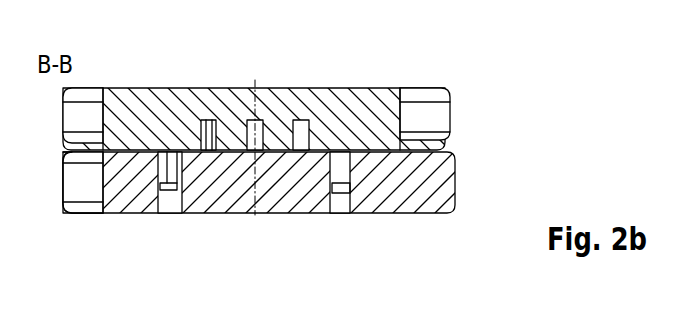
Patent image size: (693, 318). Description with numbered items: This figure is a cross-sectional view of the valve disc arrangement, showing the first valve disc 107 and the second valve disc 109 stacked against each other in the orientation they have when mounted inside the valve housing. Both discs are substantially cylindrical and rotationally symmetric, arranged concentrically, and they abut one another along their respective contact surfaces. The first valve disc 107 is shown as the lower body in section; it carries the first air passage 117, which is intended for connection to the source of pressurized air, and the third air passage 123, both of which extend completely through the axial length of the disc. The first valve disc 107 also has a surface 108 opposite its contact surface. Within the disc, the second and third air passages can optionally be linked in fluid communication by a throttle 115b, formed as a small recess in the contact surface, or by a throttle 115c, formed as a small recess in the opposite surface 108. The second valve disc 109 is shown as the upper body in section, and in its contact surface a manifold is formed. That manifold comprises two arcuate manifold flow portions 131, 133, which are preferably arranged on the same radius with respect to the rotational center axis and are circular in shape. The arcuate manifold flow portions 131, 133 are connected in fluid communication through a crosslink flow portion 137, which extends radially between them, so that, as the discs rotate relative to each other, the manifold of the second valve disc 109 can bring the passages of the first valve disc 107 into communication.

The first valve disc 107 is at (455, 182).
The surface opposite the contact surface 108 is at (132, 215).
The second valve disc 109 is at (440, 117).
The throttle 115b is at (265, 157).
The throttle 115c is at (247, 200).
The first air passage 117 is at (168, 215).
The third air passage 123 is at (340, 215).
The arcuate manifold flow portion 131 is at (200, 130).
The arcuate manifold flow portion 133 is at (304, 131).
The crosslink flow portion 137 is at (268, 120).